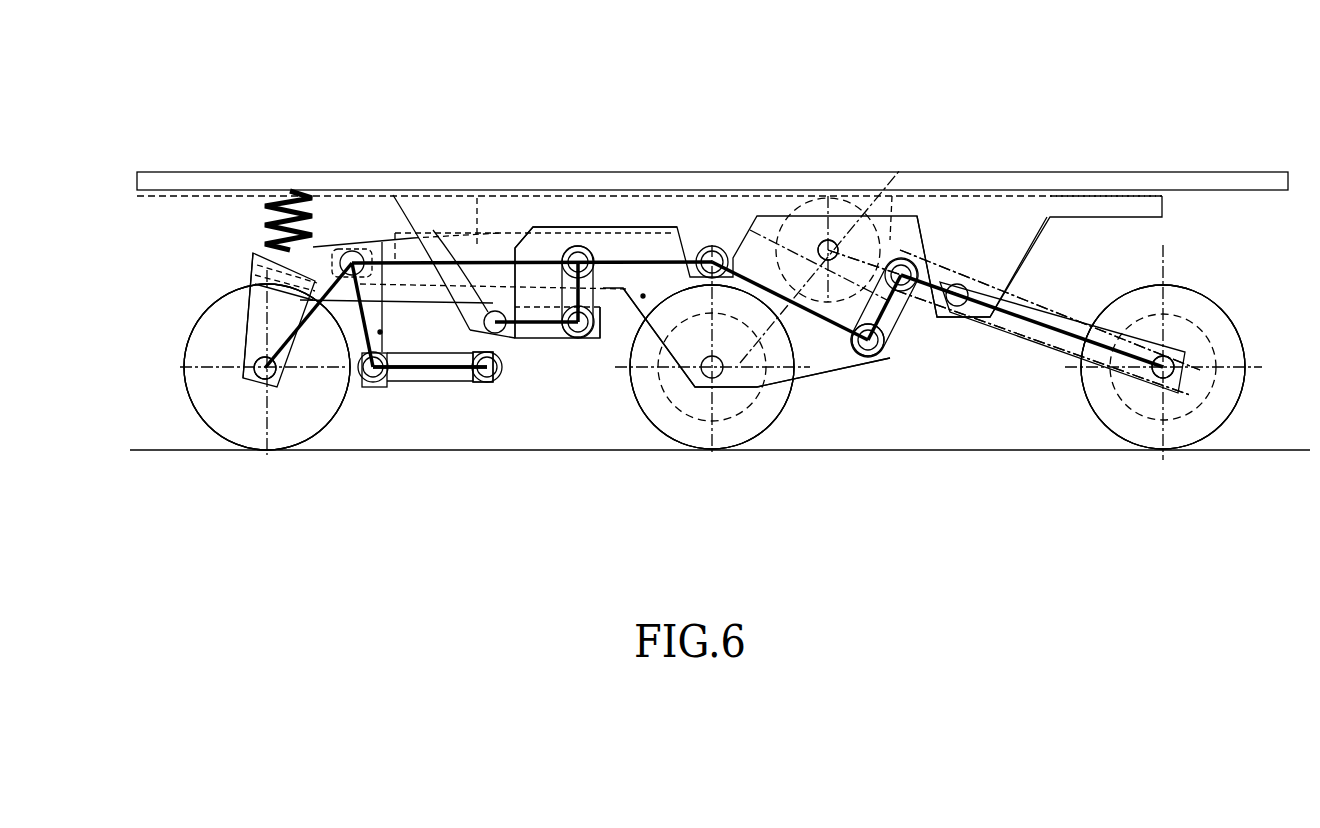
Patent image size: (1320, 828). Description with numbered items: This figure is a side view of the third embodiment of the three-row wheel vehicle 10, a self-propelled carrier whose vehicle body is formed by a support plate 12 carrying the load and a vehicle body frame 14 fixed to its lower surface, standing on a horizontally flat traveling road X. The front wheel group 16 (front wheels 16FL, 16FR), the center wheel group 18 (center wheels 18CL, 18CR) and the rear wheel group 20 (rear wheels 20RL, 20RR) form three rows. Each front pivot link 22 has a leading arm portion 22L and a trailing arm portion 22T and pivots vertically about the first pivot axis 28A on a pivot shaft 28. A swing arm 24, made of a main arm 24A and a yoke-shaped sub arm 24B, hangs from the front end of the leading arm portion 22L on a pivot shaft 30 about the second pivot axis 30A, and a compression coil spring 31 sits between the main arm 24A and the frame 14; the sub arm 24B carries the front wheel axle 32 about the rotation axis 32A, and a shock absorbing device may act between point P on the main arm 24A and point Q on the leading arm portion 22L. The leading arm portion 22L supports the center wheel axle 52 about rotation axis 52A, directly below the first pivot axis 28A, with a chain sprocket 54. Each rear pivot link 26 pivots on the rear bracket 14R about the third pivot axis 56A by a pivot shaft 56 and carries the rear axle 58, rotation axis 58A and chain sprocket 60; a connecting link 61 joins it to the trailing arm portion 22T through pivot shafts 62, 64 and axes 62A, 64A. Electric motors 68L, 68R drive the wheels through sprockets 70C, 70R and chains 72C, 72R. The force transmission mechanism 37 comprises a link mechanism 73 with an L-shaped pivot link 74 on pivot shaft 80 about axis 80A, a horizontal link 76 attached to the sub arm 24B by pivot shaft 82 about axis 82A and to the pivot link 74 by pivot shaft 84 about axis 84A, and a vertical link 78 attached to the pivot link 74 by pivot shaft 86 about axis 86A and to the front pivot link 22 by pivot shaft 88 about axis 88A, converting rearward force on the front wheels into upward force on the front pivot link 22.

The three-row wheel vehicle 10 is at (178, 144).
The support plate 12 is at (1250, 180).
The vehicle body frame 14 is at (1133, 205).
The rear bracket 14R is at (1010, 208).
The front wheel group 16 is at (203, 432).
The front left wheel 16FL is at (205, 407).
The front right wheel 16FR is at (267, 367).
The center wheel group 18 is at (651, 428).
The center left wheel 18CL is at (737, 437).
The center right wheel 18CR is at (712, 367).
The rear wheel group 20 is at (1104, 432).
The rear left wheel 20RL is at (1197, 425).
The rear right wheel 20RR is at (1163, 367).
The front pivot link 22 is at (637, 230).
The leading arm portion 22L is at (481, 233).
The trailing arm portion 22T is at (833, 363).
The swing arm 24 is at (245, 263).
The main arm 24A is at (275, 255).
The sub arm 24B is at (252, 320).
The rear pivot link 26 is at (1072, 297).
The pivot shaft 28 is at (717, 252).
The first pivot axis 28A is at (706, 250).
The pivot shaft 30 is at (372, 242).
The second pivot axis 30A is at (350, 253).
The compression coil spring 31 is at (280, 194).
The axle 32 is at (262, 390).
The rotation axis 32A is at (256, 364).
The force transmission mechanism 37 is at (379, 395).
The axle 52 is at (775, 382).
The rotation axis 52A is at (697, 390).
The chain sprocket 54 is at (750, 415).
The pivot shaft 56 is at (960, 308).
The third pivot axis 56A is at (1030, 264).
The axle 58 is at (1180, 342).
The rotation axis 58A is at (1190, 385).
The chain sprocket 60 is at (1187, 316).
The connecting link 61 is at (902, 320).
The pivot shaft 62 is at (910, 268).
The pivot axis 62A is at (920, 216).
The pivot shaft 64 is at (872, 358).
The pivot axis 64A is at (878, 358).
The electric motor 68L is at (892, 207).
The electric motor 68R is at (894, 272).
The chain sprocket 70C is at (828, 242).
The chain sprocket 70R is at (828, 250).
The chain 72C is at (783, 207).
The chain 72R is at (1030, 364).
The link mechanism 73 is at (447, 397).
The pivot link 74 is at (535, 332).
The horizontal link 76 is at (394, 396).
The vertical link 78 is at (545, 262).
The pivot shaft 80 is at (483, 318).
The pivot axis 80A is at (480, 300).
The pivot shaft 82 is at (352, 380).
The pivot axis 82A is at (367, 384).
The pivot shaft 84 is at (500, 385).
The pivot axis 84A is at (485, 385).
The pivot shaft 86 is at (574, 336).
The pivot axis 86A is at (583, 338).
The pivot shaft 88 is at (575, 250).
The pivot axis 88A is at (582, 248).
The point P is at (383, 332).
The point Q is at (653, 286).
The traveling road X is at (584, 450).